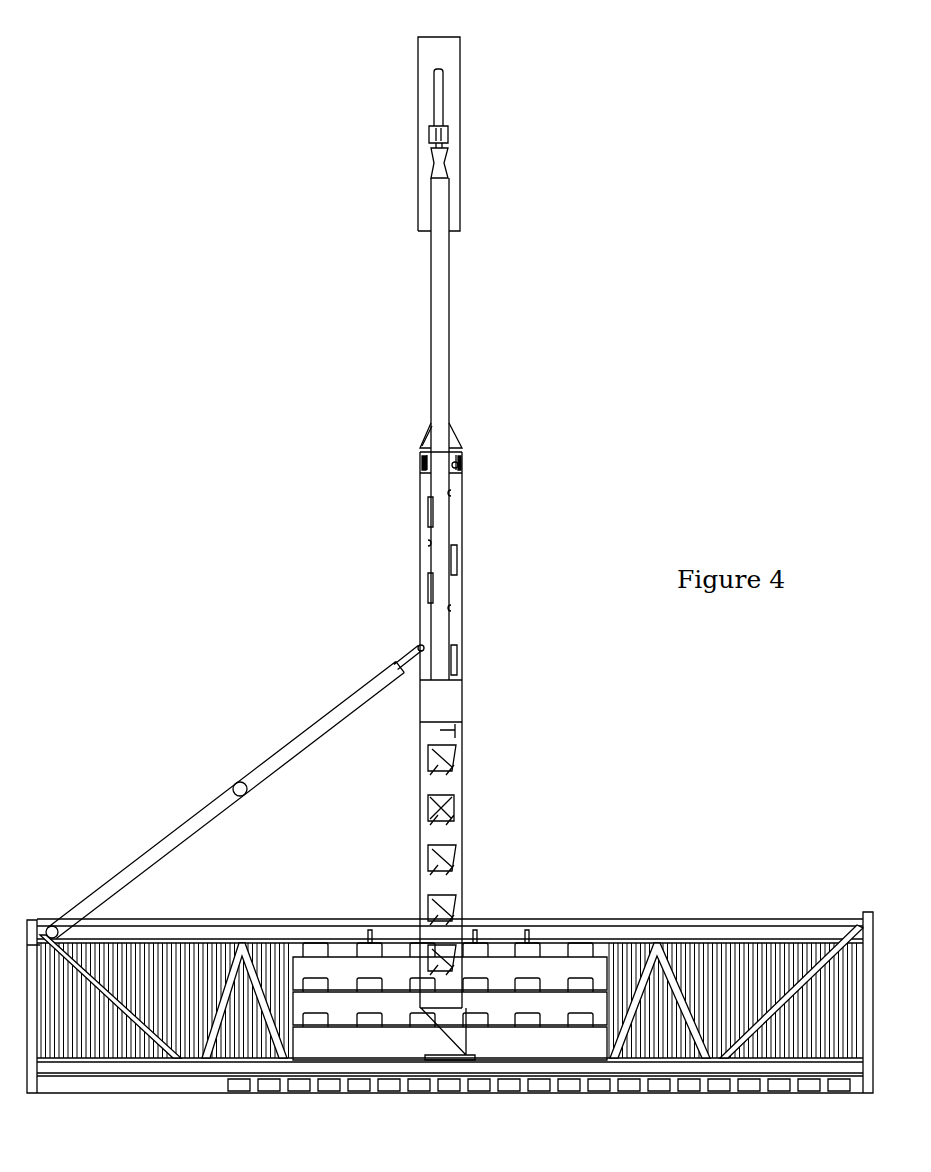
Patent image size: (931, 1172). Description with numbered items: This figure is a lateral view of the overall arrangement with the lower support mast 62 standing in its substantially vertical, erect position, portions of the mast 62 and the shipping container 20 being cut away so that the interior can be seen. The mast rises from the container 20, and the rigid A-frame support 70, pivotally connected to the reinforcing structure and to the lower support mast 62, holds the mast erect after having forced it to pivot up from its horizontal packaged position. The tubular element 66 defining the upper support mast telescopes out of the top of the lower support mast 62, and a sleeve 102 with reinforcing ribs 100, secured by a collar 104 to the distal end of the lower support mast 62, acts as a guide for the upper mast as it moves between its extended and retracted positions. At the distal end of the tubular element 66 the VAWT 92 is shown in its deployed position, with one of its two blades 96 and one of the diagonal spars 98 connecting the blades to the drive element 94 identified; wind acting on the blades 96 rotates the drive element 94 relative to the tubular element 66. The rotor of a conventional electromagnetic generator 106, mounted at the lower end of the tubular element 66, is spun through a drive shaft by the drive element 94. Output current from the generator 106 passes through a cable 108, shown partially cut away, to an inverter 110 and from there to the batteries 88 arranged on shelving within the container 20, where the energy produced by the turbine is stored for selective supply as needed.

The shipping container 20 is at (770, 896).
The lower turbine support mast 62 is at (464, 575).
The tubular element 66 is at (450, 322).
The A-frame support 70 is at (290, 740).
The batteries 88 is at (572, 942).
The VAWT 92 is at (398, 175).
The drive element 94 is at (449, 136).
The blades 96 is at (462, 62).
The diagonal spars 98 is at (433, 108).
The reinforcing ribs 100 is at (457, 442).
The sleeve 102 is at (427, 445).
The collar 104 is at (460, 468).
The electromagnetic generator 106 is at (457, 678).
The cable 108 is at (450, 830).
The inverter 110 is at (435, 997).